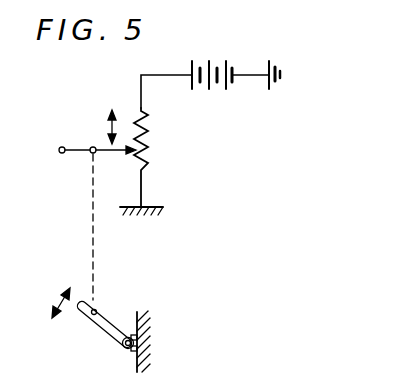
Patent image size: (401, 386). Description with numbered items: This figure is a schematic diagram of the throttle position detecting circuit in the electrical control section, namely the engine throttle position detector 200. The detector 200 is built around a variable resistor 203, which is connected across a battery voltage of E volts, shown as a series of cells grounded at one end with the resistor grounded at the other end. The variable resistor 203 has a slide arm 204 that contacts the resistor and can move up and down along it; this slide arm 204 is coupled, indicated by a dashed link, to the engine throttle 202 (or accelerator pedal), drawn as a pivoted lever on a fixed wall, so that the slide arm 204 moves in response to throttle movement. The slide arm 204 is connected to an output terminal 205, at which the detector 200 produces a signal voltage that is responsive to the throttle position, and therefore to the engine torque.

The engine throttle position detector 200 is at (117, 80).
The engine throttle 202 is at (86, 317).
The variable resistor 203 is at (152, 122).
The slide arm 204 is at (95, 146).
The output terminal 205 is at (62, 153).